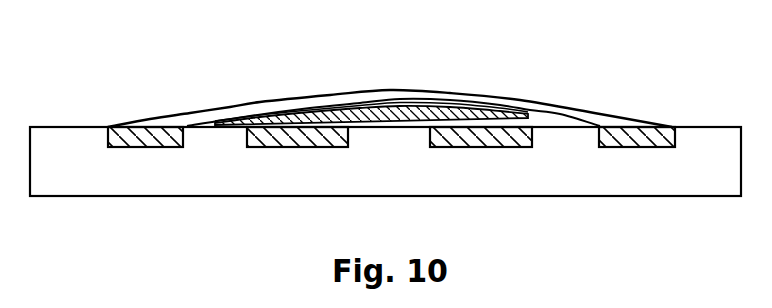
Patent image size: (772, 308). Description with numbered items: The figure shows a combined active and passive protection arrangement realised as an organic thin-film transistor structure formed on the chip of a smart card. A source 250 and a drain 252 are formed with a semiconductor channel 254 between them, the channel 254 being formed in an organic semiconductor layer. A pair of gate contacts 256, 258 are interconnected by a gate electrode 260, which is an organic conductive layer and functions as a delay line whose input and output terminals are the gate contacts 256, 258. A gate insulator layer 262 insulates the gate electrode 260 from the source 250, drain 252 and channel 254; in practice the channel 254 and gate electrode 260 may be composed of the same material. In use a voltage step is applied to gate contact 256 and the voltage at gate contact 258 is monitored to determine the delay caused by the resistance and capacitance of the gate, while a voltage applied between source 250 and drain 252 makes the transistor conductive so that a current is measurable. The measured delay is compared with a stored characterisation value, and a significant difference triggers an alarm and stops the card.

The source 250 is at (290, 135).
The drain 252 is at (527, 114).
The semiconductor channel 254 is at (365, 117).
The gate contact 256 is at (109, 127).
The gate contact 258 is at (648, 137).
The gate electrode 260 is at (230, 110).
The gate insulator layer 262 is at (463, 112).